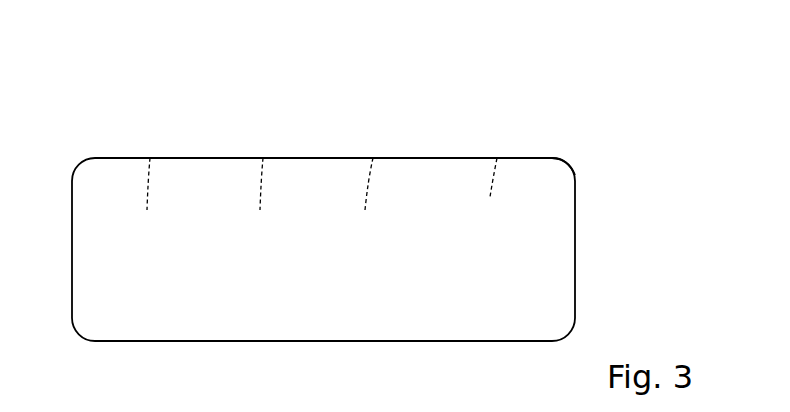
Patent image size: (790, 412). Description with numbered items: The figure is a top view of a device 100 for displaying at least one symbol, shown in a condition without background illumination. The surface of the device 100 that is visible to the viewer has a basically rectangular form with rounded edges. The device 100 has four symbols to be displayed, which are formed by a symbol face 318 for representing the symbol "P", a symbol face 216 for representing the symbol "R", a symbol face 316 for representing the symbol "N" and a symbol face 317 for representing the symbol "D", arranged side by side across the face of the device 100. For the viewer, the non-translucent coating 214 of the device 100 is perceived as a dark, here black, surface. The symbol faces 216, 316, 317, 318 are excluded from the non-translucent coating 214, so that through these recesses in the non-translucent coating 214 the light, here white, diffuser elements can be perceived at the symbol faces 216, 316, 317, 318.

The device 100 is at (89, 133).
The symbol face 318 is at (150, 158).
The symbol face 216 is at (263, 158).
The symbol face 316 is at (373, 158).
The symbol face 317 is at (497, 158).
The non-translucent coating 214 is at (567, 162).